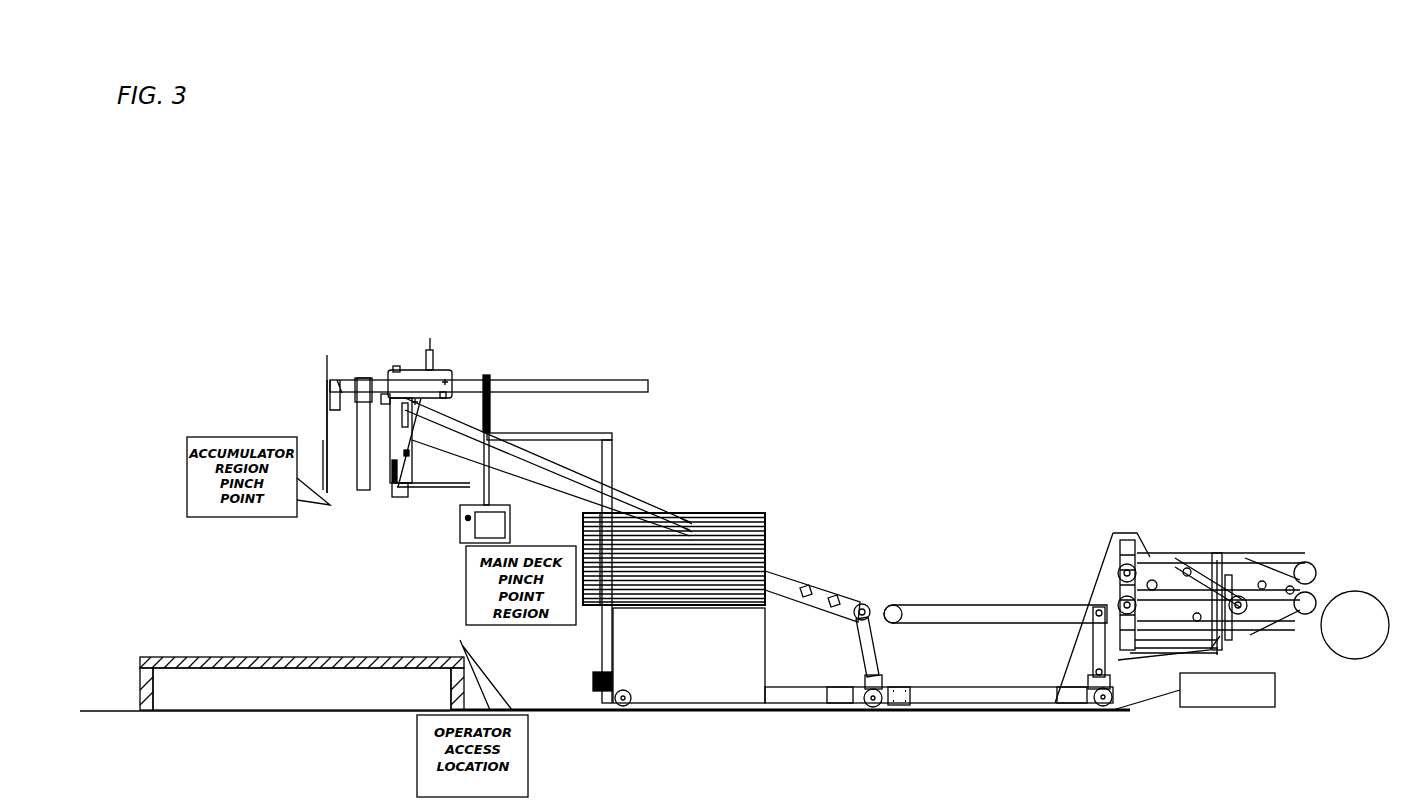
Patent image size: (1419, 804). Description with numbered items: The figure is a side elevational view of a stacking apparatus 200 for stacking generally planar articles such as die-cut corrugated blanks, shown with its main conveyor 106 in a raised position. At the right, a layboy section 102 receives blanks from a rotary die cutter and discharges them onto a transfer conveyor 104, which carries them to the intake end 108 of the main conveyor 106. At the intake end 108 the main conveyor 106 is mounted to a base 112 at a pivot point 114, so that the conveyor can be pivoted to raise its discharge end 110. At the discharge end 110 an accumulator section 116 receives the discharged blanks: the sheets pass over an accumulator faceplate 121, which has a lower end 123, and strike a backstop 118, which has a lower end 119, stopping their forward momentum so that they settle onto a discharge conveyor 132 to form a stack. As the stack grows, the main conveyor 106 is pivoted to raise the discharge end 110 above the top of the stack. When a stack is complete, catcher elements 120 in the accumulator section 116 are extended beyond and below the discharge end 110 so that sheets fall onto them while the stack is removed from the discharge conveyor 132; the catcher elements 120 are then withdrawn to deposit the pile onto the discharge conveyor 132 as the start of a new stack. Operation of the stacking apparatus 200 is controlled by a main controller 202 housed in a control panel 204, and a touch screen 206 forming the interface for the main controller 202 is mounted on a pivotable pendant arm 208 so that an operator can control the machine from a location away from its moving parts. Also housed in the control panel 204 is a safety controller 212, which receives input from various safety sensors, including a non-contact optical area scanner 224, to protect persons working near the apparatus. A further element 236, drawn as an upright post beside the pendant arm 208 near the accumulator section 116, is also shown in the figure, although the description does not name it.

The layboy section 102 is at (1212, 522).
The transfer conveyor 104 is at (996, 603).
The main conveyor 106 is at (788, 573).
The intake end 108 is at (870, 610).
The discharge end 110 is at (423, 424).
The base 112 is at (816, 712).
The pivot point 114 is at (868, 607).
The accumulator section 116 is at (385, 318).
The backstop 118 is at (327, 447).
The lower end of backstop 119 is at (330, 483).
The catcher elements 120 is at (330, 483).
The accumulator faceplate 121 is at (402, 487).
The lower end of accumulator faceplate 123 is at (400, 483).
The discharge conveyor 132 is at (291, 656).
The stacking apparatus 200 is at (667, 572).
The main controller 202 is at (723, 631).
The control panel 204 is at (742, 512).
The touch screen 206 is at (463, 541).
The pivotable pendant arm 208 is at (572, 433).
The safety controller 212 is at (727, 698).
The non-contact optical area scanner 224 is at (592, 678).
The light curtain post 236 is at (487, 378).